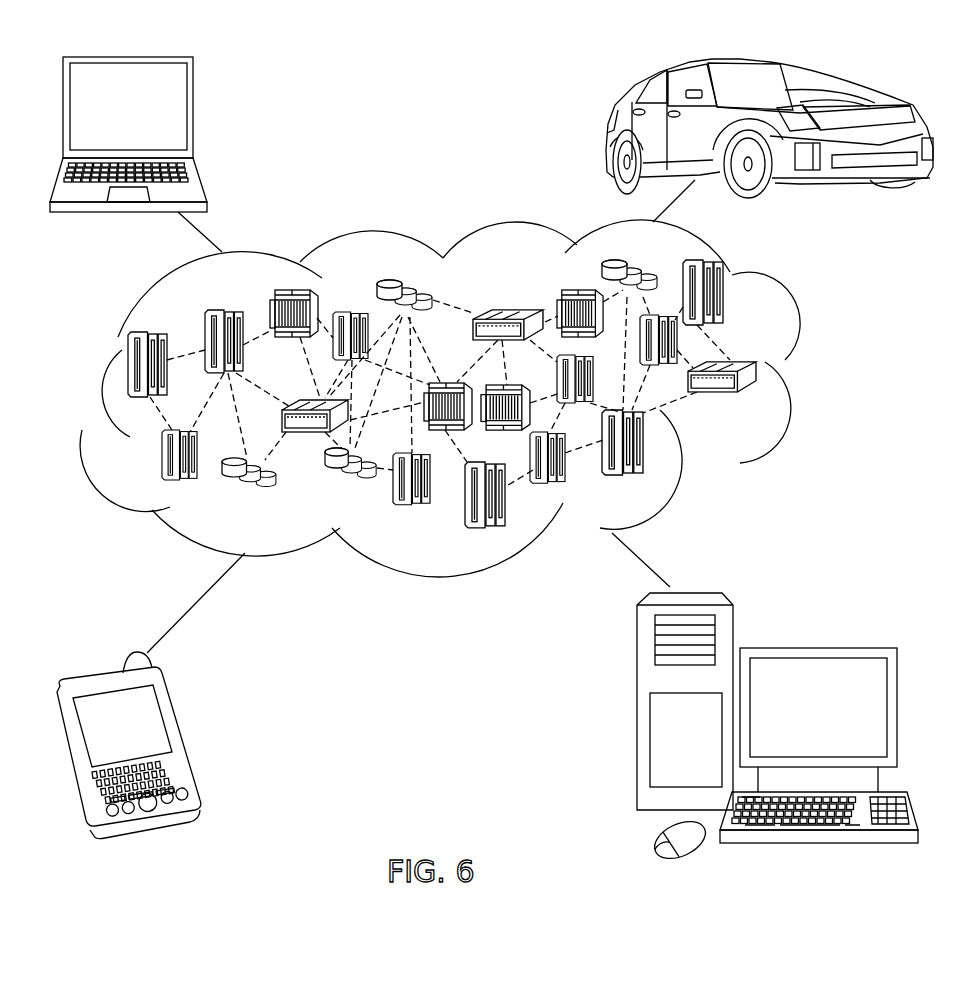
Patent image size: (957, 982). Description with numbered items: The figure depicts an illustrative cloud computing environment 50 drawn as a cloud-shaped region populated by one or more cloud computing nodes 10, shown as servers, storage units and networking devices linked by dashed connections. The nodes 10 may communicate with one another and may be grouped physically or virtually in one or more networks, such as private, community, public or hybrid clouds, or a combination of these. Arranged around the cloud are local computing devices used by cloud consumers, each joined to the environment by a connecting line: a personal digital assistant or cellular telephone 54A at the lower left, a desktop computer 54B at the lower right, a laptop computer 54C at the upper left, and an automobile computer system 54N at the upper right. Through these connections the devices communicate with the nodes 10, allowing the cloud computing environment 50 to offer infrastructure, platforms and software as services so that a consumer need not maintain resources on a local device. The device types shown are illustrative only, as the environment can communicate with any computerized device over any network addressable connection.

The cloud computing nodes 10 is at (491, 461).
The cloud computing environment 50 is at (818, 370).
The personal digital assistant or cellular telephone 54A is at (183, 736).
The desktop computer 54B is at (815, 646).
The laptop computer 54C is at (193, 112).
The automobile computer system 54N is at (609, 128).